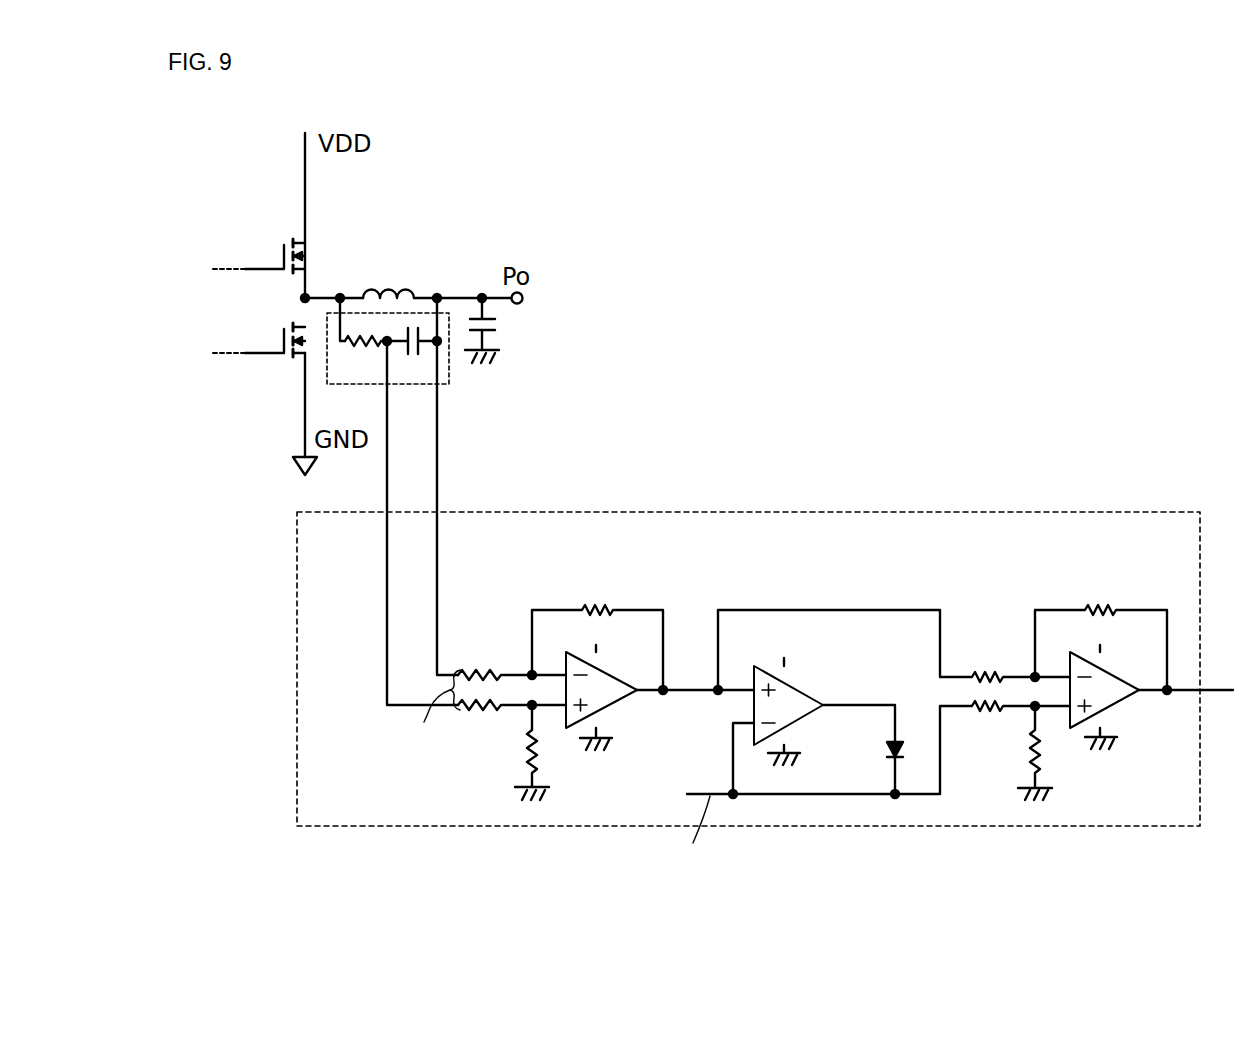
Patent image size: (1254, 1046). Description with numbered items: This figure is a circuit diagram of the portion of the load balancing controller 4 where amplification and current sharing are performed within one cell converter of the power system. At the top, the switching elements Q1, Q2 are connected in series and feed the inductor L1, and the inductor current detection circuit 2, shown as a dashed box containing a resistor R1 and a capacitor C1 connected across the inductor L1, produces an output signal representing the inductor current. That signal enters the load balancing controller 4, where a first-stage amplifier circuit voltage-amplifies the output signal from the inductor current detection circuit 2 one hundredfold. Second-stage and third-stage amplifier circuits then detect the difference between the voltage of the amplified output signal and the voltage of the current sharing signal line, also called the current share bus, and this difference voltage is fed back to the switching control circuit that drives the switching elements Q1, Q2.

The inductor current detection circuit 2 is at (402, 375).
The load balancing controller 4 is at (903, 512).
The switching element Q1 is at (257, 243).
The switching element Q2 is at (257, 357).
The inductor L1 is at (388, 279).
The resistor R1 is at (366, 358).
The capacitor C1 is at (412, 354).